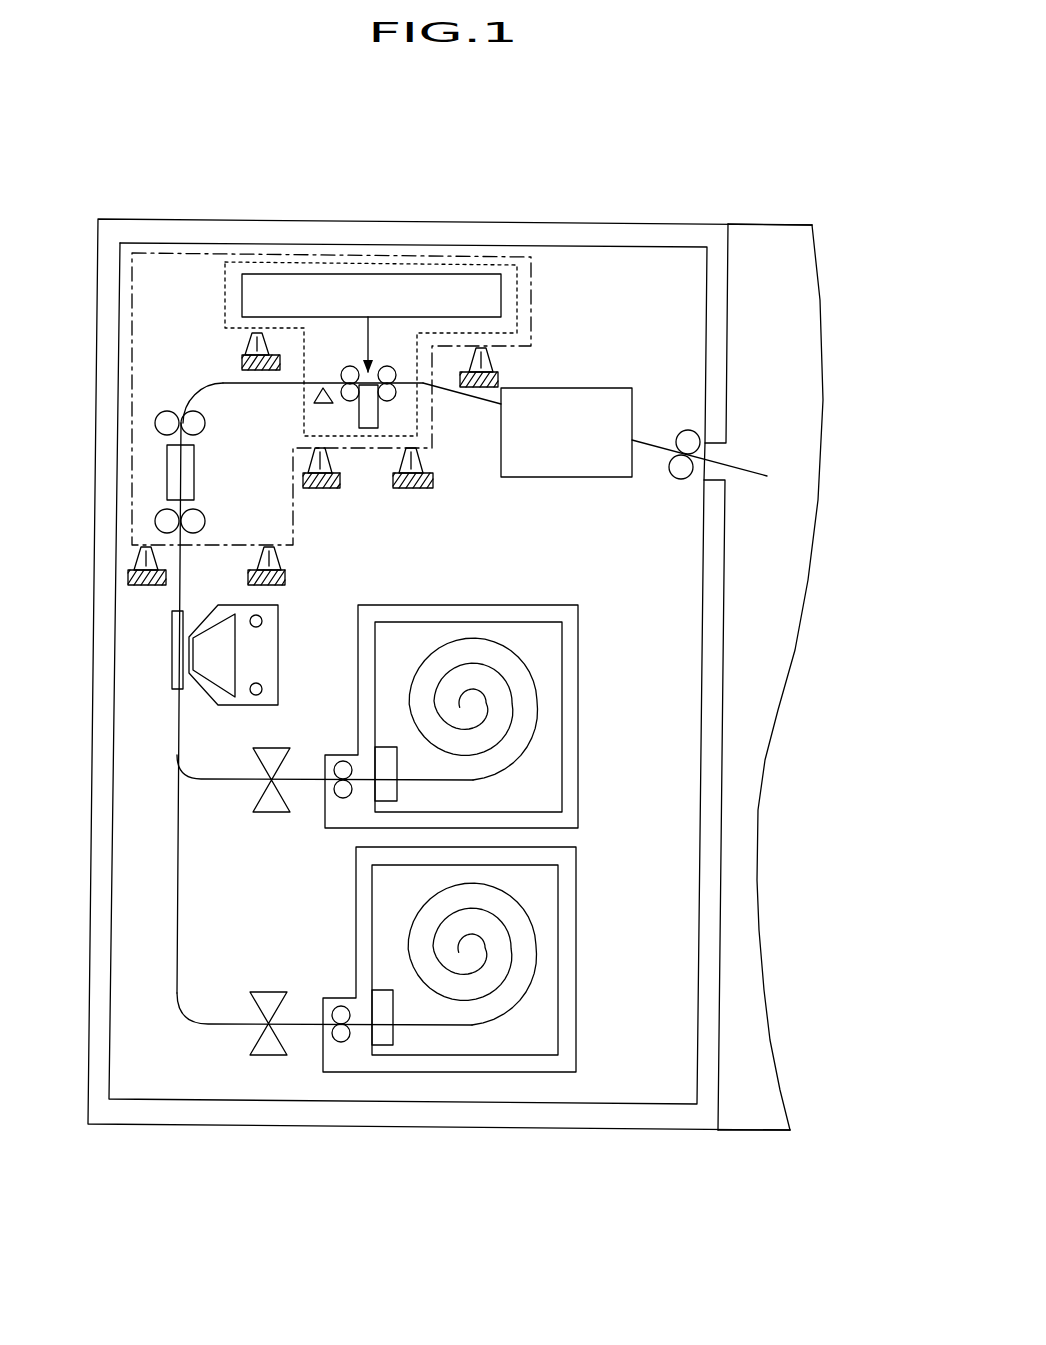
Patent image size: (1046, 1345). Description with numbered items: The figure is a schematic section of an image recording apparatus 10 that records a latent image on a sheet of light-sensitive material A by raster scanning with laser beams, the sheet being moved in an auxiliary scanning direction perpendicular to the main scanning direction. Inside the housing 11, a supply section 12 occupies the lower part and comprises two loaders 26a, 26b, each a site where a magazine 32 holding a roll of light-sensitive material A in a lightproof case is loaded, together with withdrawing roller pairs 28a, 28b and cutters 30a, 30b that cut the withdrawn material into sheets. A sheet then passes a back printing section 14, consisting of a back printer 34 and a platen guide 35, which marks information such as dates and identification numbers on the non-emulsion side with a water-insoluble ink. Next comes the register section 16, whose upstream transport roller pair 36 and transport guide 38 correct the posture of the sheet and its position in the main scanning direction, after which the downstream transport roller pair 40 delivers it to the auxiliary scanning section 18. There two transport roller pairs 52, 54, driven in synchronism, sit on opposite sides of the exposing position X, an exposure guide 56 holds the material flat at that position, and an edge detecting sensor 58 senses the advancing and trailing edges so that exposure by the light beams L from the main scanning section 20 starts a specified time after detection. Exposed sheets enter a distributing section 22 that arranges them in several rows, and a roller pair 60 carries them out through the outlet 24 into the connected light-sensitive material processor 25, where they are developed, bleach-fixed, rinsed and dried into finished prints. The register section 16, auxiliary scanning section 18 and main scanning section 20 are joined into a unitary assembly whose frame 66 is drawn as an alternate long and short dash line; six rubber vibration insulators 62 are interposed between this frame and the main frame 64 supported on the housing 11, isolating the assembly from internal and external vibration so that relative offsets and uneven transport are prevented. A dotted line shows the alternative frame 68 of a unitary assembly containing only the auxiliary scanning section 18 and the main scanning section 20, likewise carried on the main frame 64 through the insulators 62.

The image recording apparatus 10 is at (706, 202).
The housing 11 is at (688, 1112).
The light-sensitive material supply section 12 is at (653, 660).
The back printing section 14 is at (307, 555).
The register section 16 is at (181, 365).
The auxiliary scanning section 18 is at (376, 511).
The main scanning section 20 is at (348, 290).
The distributing section 22 is at (572, 462).
The outlet 24 is at (736, 451).
The light-sensitive material processor 25 is at (750, 1098).
The loader 26a is at (578, 732).
The loader 26b is at (577, 975).
The withdrawing roller pair 28a is at (343, 753).
The withdrawing roller pair 28b is at (342, 996).
The cutter 30a is at (272, 812).
The cutter 30b is at (267, 990).
The magazine 32 is at (497, 622).
The back printer 34 is at (278, 650).
The platen guide 35 is at (172, 647).
The upstream transport roller pair 36 is at (197, 522).
The transport guide 38 is at (177, 475).
The downstream transport roller pair 40 is at (170, 420).
The transport roller pair 52 is at (347, 395).
The transport roller pair 54 is at (387, 392).
The exposure guide 56 is at (370, 428).
The edge detecting sensor 58 is at (313, 401).
The roller pair 60 is at (681, 470).
The rubber vibration insulator 62 is at (247, 347).
The main frame 64 is at (256, 372).
The frame of the unitary assembly 66 is at (531, 275).
The frame of the unitary assembly 68 is at (517, 320).
The light beams L is at (367, 355).
The exposing position X is at (378, 362).
The light-sensitive material A is at (743, 472).